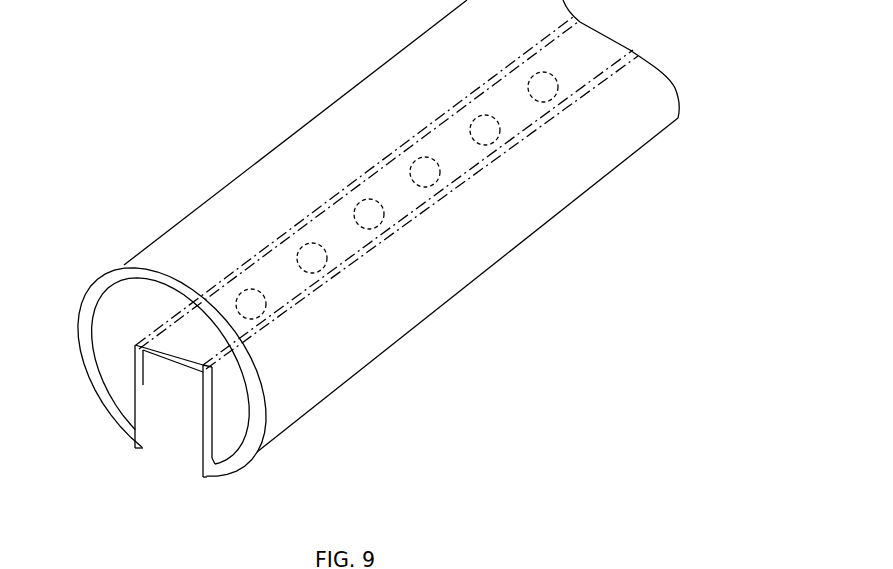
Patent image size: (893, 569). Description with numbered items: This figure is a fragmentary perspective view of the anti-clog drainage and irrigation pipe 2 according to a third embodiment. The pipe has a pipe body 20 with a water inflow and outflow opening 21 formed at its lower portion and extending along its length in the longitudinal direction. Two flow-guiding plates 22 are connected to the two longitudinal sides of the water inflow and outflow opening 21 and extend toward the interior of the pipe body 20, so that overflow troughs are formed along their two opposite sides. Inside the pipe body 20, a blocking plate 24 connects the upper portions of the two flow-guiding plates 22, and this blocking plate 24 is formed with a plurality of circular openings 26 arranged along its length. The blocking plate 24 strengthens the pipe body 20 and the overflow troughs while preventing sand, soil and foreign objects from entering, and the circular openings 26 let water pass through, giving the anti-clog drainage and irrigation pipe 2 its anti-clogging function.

The anti-clog drainage and irrigation pipe 2 is at (218, 144).
The pipe body 20 is at (348, 110).
The water inflow and outflow opening 21 is at (175, 455).
The flow-guiding plates 22 is at (143, 385).
The blocking plate 24 is at (187, 340).
The circular openings 26 is at (253, 305).